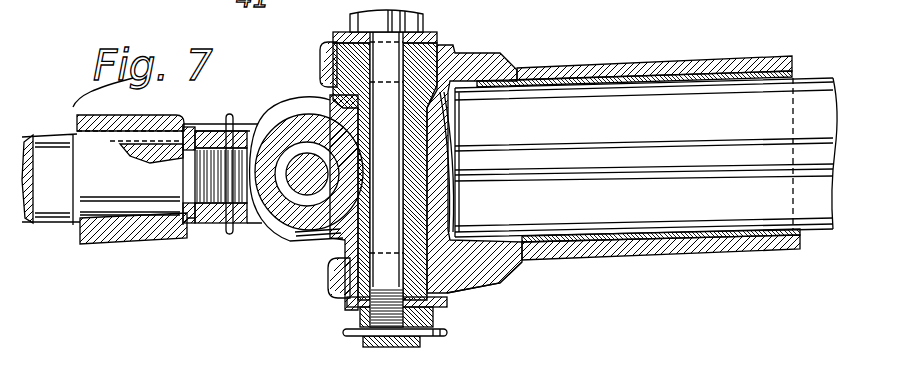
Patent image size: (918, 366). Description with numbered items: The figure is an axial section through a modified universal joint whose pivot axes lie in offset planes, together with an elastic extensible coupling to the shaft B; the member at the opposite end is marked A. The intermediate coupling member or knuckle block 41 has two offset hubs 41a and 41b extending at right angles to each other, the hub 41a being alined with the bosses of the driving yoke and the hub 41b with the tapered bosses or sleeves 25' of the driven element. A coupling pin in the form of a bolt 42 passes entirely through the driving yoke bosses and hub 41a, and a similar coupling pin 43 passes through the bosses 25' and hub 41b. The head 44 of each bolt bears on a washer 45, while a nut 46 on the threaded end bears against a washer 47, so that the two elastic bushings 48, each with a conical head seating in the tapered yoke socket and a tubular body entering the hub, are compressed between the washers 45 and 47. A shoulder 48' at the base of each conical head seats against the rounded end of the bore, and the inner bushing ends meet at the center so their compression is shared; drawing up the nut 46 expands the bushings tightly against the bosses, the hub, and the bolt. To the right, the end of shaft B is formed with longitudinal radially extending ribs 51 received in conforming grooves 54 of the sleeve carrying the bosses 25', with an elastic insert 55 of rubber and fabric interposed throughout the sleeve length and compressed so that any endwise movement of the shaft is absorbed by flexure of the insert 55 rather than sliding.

The pipe A is at (46, 214).
The shaft B is at (830, 85).
The tapered bosses or sleeves 25' is at (309, 188).
The coupling member or knuckle block 41 is at (326, 106).
The hub 41a is at (270, 140).
The hub 41b is at (444, 213).
The bolt 42 is at (295, 228).
The coupling pin 43 is at (395, 236).
The head 44 is at (423, 15).
The washer 45 is at (423, 31).
The nut 46 is at (450, 333).
The washer 47 is at (440, 311).
The elastic bushings 48 is at (406, 162).
The shoulder 48' is at (504, 284).
The radially extending arms or ribs 51 is at (798, 80).
The grooves or channels 54 is at (582, 78).
The elastic insert 55 is at (633, 83).